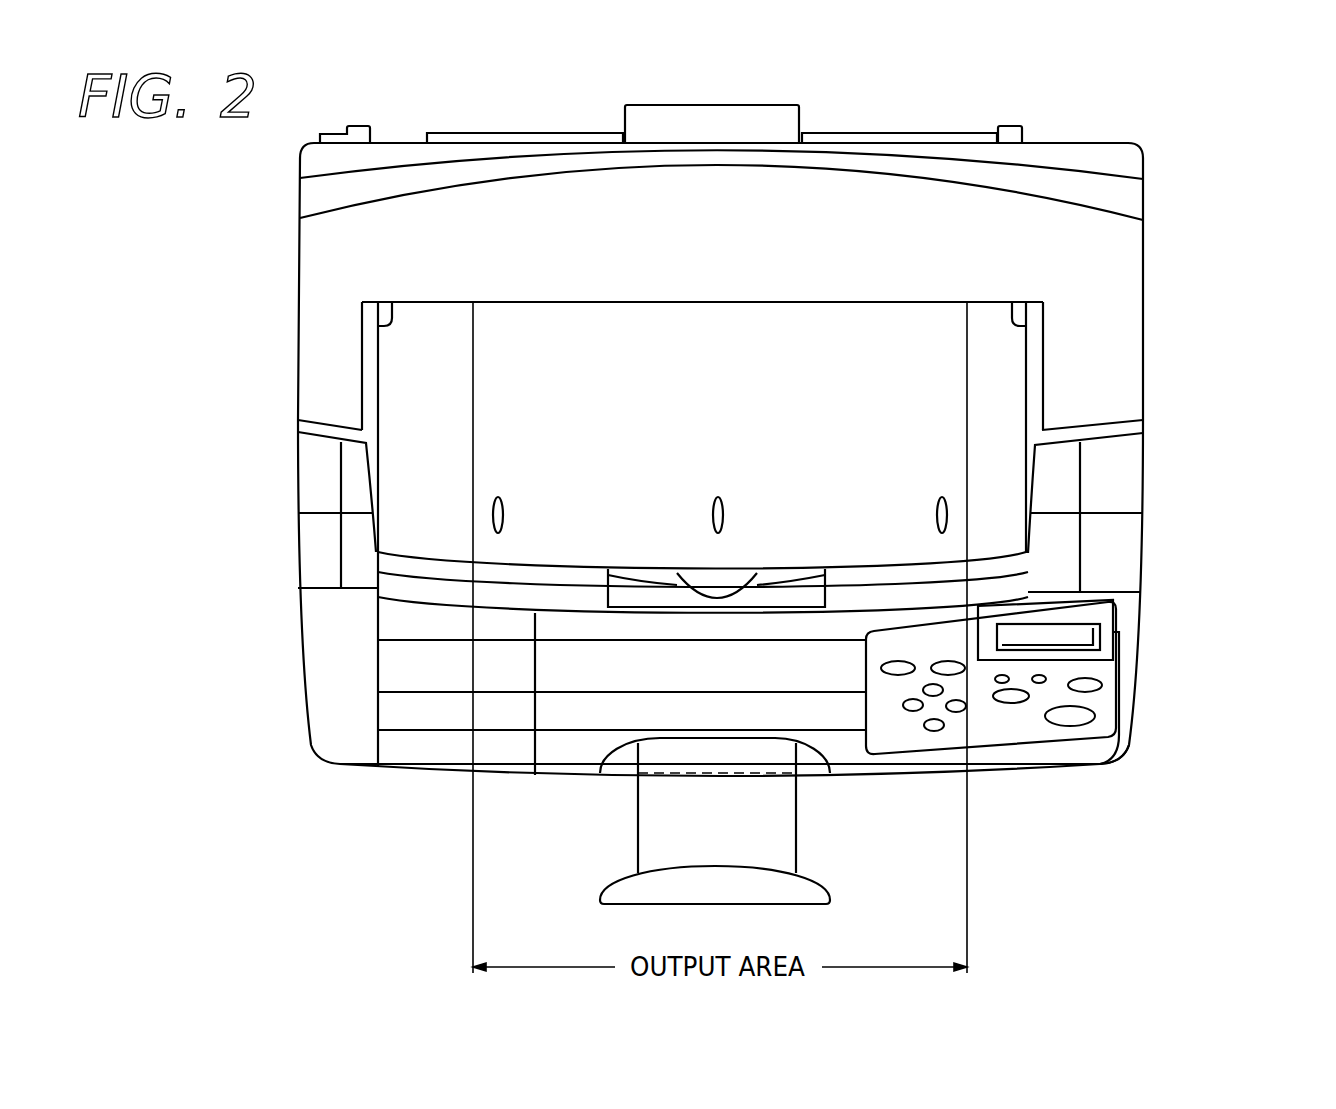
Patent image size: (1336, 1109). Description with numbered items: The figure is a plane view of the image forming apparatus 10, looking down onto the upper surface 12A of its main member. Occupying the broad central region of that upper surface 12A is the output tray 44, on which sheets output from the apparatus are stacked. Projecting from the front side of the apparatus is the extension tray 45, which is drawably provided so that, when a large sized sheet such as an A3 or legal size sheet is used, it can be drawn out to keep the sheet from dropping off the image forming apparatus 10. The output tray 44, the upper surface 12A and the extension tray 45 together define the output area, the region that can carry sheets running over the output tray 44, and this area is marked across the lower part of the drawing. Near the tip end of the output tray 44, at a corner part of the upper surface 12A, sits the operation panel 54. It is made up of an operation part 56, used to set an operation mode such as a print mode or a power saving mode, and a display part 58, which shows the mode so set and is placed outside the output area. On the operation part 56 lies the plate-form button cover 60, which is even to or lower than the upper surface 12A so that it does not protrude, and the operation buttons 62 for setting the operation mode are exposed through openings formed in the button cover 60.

The image forming apparatus 10 is at (1209, 387).
The upper surface 12A is at (1097, 752).
The output tray 44 is at (998, 489).
The extension tray 45 is at (773, 847).
The operation panel 54 is at (1115, 682).
The operation part 56 is at (1212, 620).
The display part 58 is at (1093, 612).
The button cover 60 is at (918, 732).
The operation buttons 62 is at (912, 708).